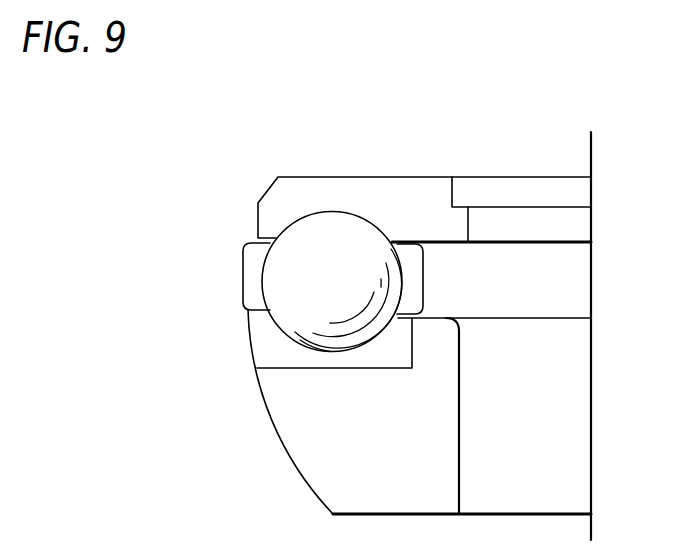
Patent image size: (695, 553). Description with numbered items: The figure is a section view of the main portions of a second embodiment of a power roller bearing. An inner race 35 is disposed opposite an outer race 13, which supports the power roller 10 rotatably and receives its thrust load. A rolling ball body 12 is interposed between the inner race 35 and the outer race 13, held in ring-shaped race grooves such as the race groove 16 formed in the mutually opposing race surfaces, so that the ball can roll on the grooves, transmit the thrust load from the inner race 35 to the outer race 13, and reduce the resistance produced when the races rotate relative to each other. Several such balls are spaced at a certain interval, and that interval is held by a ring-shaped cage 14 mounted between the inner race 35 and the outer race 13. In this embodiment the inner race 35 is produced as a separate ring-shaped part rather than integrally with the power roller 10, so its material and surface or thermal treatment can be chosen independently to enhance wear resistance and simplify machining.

The power roller 10 is at (408, 493).
The rolling ball body 12 is at (318, 254).
The outer race 13 is at (390, 200).
The ring-shaped cage 14 is at (248, 265).
The race groove 16 is at (313, 350).
The inner race 35 is at (263, 338).